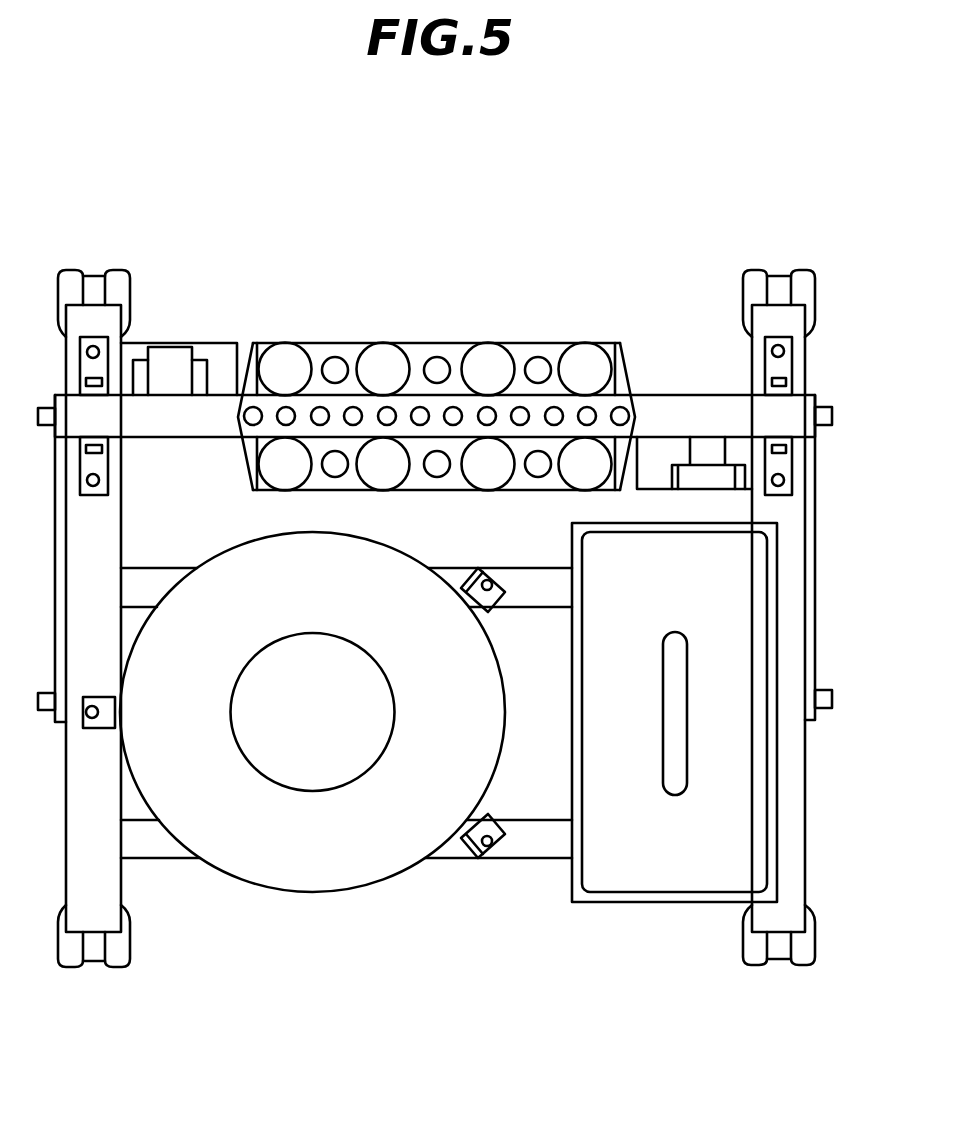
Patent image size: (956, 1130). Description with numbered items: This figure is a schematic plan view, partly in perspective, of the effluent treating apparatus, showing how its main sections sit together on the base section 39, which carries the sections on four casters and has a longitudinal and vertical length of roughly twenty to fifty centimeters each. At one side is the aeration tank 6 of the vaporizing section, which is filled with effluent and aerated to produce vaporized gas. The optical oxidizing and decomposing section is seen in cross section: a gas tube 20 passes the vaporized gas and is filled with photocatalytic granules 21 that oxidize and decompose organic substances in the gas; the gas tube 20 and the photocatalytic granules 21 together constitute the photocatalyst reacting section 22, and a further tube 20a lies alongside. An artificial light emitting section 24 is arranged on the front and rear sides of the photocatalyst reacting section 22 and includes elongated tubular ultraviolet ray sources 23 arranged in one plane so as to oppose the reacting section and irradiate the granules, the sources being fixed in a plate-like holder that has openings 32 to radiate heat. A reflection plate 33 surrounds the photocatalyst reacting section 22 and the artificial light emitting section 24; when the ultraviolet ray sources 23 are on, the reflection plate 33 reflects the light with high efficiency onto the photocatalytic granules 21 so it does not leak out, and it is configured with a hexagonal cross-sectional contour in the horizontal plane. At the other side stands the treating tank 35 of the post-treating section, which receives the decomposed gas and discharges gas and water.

The aeration tank 6 is at (320, 878).
The gas tube 20 is at (553, 407).
The guide roller 20a is at (620, 407).
The photocatalytic granules 21 is at (487, 407).
The photocatalyst reacting section 22 is at (564, 340).
The ultraviolet ray sources 23 is at (282, 362).
The artificial light emitting section 24 is at (352, 340).
The opening 32 is at (336, 366).
The reflection plate 33 is at (628, 387).
The treating tank 35 is at (667, 877).
The base section 39 is at (792, 505).